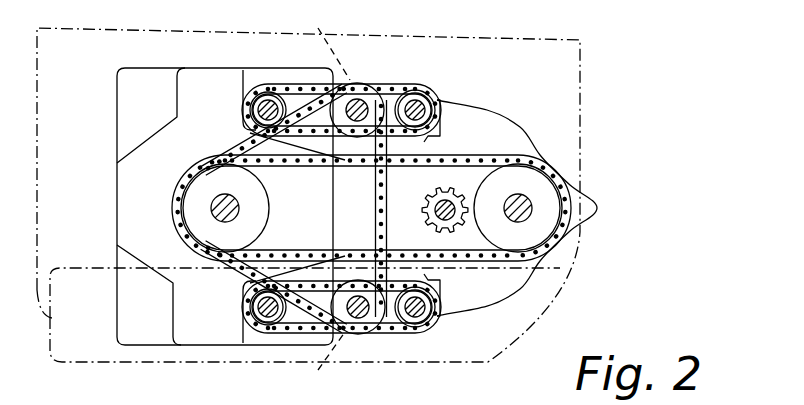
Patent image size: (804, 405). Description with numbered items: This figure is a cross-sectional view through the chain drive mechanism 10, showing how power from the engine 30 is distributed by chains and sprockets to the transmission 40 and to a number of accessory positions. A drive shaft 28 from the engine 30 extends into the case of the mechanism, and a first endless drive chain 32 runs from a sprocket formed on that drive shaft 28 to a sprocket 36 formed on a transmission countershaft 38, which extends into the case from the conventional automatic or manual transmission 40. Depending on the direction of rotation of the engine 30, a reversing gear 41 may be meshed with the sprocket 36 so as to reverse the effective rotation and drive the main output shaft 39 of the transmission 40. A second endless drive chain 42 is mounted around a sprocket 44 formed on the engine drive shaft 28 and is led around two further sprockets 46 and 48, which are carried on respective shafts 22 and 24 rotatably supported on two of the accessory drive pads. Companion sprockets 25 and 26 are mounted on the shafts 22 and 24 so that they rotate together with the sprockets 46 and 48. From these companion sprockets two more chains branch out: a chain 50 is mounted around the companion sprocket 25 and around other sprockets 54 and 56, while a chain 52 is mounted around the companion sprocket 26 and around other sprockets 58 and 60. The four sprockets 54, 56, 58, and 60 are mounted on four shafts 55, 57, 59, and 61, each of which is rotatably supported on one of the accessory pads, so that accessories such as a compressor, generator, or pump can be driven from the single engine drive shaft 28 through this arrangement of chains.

The chain drive mechanism 10 is at (205, 78).
The shaft 22 is at (363, 316).
The shaft 24 is at (358, 100).
The companion sprocket 25 is at (315, 362).
The companion sprocket 26 is at (324, 40).
The drive shaft 28 is at (222, 198).
The engine 30 is at (127, 181).
The first endless drive chain 32 is at (297, 165).
The sprocket 36 is at (557, 217).
The transmission countershaft 38 is at (527, 203).
The main output shaft 39 is at (438, 210).
The transmission 40 is at (512, 140).
The reversing gear 41 is at (432, 193).
The second endless drive chain 42 is at (248, 142).
The sprocket 44 is at (192, 218).
The sprocket 46 is at (358, 290).
The sprocket 48 is at (360, 128).
The chain 50 is at (388, 333).
The chain 52 is at (392, 83).
The sprocket 54 is at (437, 298).
The shaft 55 is at (423, 310).
The sprocket 56 is at (252, 303).
The shaft 57 is at (267, 317).
The sprocket 58 is at (430, 116).
The shaft 59 is at (420, 107).
The sprocket 60 is at (270, 92).
The shaft 61 is at (263, 105).